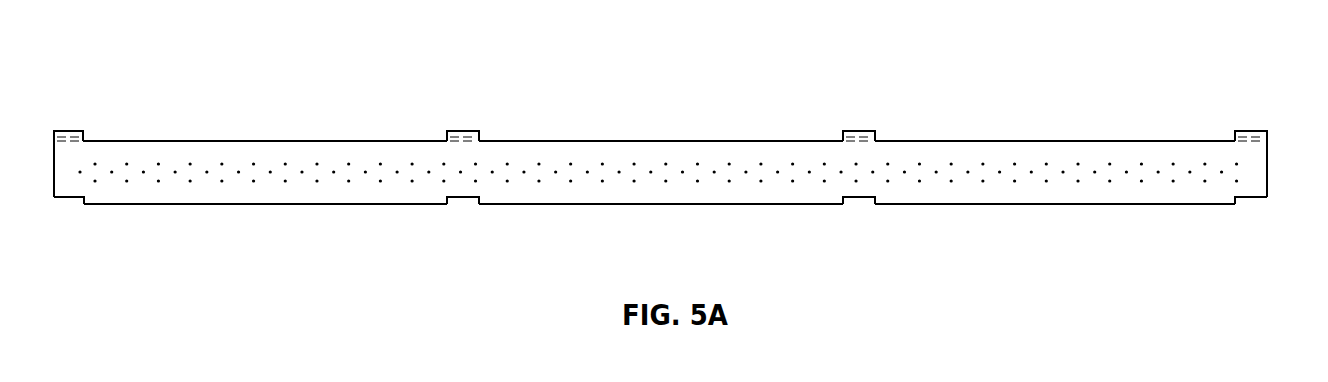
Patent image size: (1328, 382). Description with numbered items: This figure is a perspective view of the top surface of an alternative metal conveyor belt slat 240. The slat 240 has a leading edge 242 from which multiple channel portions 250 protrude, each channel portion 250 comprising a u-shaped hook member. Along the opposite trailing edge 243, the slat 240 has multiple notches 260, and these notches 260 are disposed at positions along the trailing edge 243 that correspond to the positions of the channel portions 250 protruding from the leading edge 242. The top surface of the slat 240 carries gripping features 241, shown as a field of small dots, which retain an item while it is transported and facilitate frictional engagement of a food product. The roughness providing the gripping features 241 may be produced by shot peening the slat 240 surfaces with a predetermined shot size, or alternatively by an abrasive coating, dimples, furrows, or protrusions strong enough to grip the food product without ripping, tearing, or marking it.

The alternative slat 240 is at (611, 73).
The gripping features 241 is at (603, 183).
The leading edge 242 is at (738, 140).
The trailing edge 243 is at (720, 206).
The channel portions 250 is at (70, 131).
The notches 260 is at (71, 199).